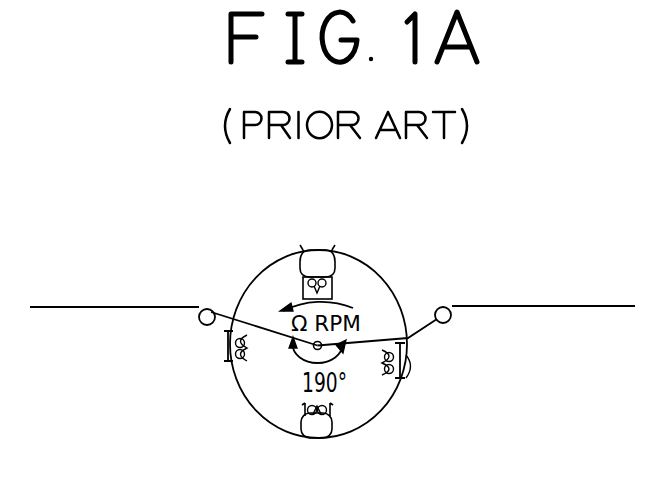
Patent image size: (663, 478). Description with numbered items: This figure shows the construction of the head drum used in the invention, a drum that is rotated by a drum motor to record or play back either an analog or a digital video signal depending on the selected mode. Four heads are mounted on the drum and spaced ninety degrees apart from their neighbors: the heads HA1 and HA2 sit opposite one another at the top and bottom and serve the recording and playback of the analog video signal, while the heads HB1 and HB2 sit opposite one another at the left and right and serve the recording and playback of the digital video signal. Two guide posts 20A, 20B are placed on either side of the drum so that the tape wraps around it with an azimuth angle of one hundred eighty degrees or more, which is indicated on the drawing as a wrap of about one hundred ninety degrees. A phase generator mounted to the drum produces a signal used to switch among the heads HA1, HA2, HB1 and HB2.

The guide post 20A is at (200, 309).
The guide post 20B is at (447, 308).
The head HA1 is at (341, 254).
The head HA2 is at (341, 439).
The head HB1 is at (186, 349).
The head HB2 is at (439, 360).